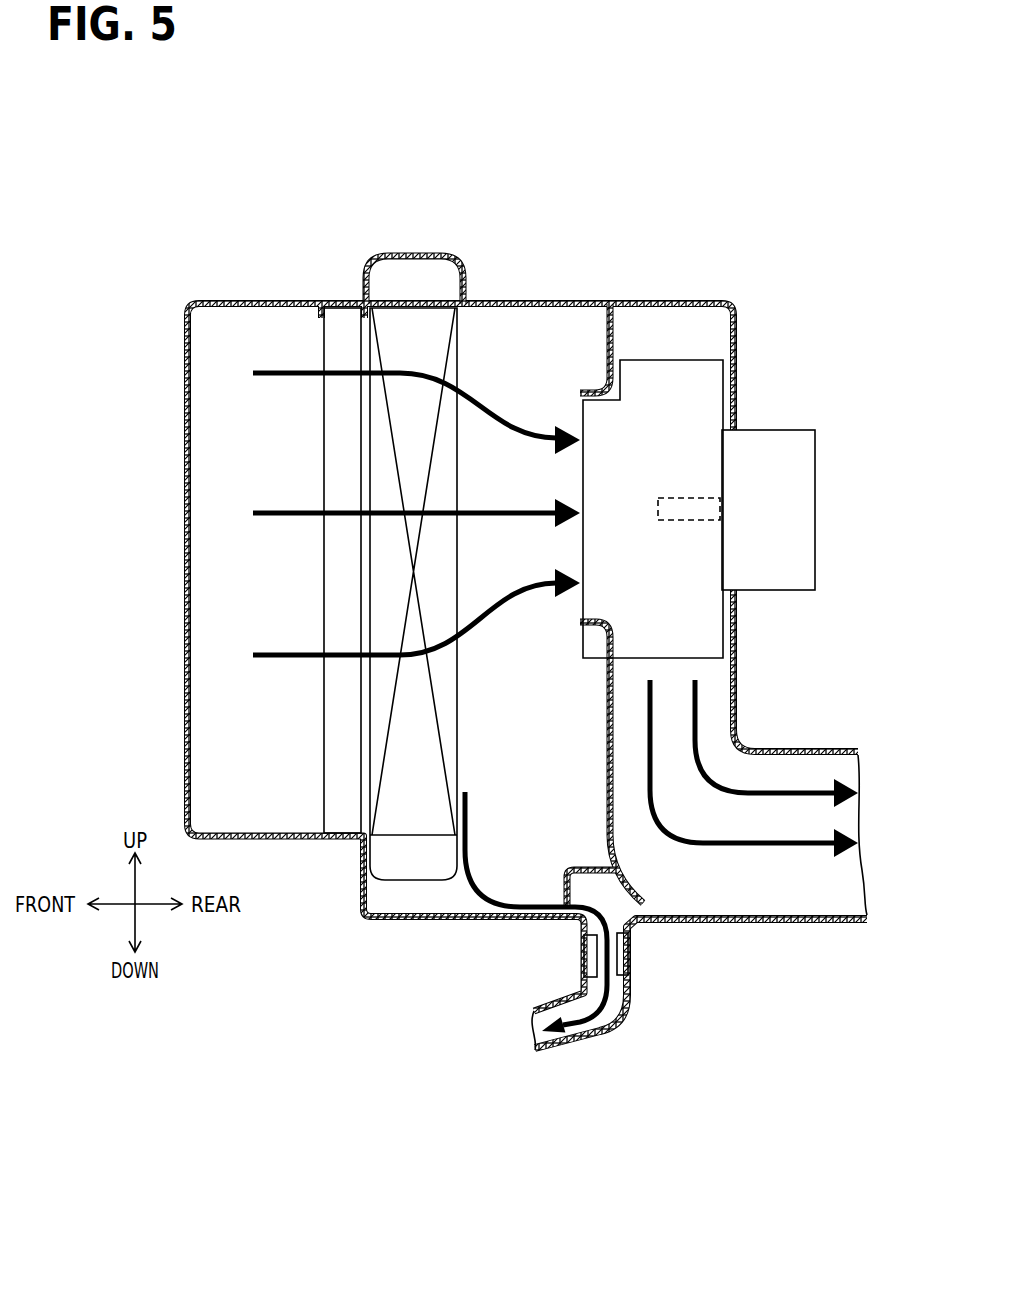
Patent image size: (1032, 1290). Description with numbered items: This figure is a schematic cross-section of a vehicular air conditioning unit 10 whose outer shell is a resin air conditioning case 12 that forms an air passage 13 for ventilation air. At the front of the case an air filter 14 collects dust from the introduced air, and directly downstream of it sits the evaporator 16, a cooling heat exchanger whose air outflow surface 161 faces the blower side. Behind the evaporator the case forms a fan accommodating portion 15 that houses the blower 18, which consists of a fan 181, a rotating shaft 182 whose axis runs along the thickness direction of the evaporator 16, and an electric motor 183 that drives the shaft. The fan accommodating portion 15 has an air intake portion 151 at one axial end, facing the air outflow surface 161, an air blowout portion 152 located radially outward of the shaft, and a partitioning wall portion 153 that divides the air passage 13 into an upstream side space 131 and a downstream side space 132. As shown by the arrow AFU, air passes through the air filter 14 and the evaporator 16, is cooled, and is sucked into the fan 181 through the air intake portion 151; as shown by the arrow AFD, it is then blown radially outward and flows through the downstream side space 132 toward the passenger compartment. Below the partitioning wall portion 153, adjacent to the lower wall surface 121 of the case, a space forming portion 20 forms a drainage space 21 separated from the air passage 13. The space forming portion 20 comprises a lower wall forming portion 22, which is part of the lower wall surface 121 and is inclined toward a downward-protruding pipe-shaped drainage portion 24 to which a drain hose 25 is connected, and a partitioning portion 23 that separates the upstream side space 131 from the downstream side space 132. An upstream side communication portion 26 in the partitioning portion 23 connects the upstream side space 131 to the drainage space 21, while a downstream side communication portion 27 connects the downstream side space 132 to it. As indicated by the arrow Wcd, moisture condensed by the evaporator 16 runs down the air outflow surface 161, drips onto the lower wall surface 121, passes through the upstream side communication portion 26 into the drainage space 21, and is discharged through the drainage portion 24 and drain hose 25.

The vehicular air conditioning unit 10 is at (845, 224).
The air conditioning case 12 is at (236, 292).
The lower wall surface 121 is at (442, 913).
The air passage 13 is at (225, 461).
The upstream side space 131 is at (492, 497).
The downstream side space 132 is at (822, 893).
The air filter 14 is at (343, 318).
The fan accommodating portion 15 is at (748, 630).
The air intake portion 151 is at (547, 395).
The air blowout portion 152 is at (729, 698).
The partitioning wall portion 153 is at (617, 767).
The evaporator 16 is at (412, 338).
The air outflow surface 161 is at (458, 366).
The blower 18 is at (598, 227).
The fan 181 is at (640, 358).
The rotating shaft 182 is at (697, 497).
The electric motor 183 is at (762, 430).
The space forming portion 20 is at (552, 886).
The drainage space 21 is at (636, 905).
The lower wall forming portion 22 is at (629, 948).
The partitioning portion 23 is at (603, 902).
The drainage portion 24 is at (633, 932).
The drain hose 25 is at (577, 1045).
The upstream side communication portion 26 is at (576, 892).
The downstream side communication portion 27 is at (674, 923).
The arrow AFU is at (278, 514).
The arrow AFD is at (797, 792).
The arrow Wcd is at (473, 897).